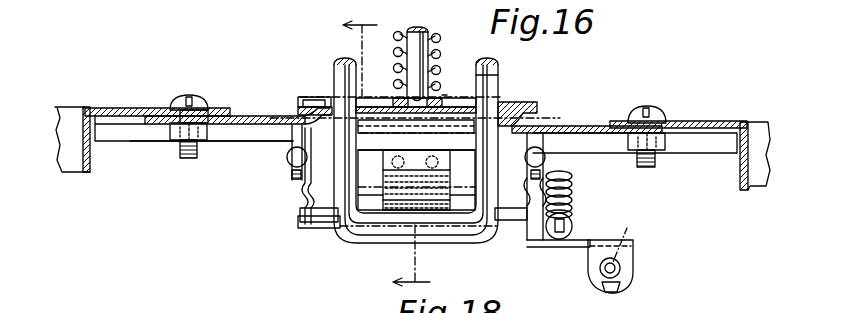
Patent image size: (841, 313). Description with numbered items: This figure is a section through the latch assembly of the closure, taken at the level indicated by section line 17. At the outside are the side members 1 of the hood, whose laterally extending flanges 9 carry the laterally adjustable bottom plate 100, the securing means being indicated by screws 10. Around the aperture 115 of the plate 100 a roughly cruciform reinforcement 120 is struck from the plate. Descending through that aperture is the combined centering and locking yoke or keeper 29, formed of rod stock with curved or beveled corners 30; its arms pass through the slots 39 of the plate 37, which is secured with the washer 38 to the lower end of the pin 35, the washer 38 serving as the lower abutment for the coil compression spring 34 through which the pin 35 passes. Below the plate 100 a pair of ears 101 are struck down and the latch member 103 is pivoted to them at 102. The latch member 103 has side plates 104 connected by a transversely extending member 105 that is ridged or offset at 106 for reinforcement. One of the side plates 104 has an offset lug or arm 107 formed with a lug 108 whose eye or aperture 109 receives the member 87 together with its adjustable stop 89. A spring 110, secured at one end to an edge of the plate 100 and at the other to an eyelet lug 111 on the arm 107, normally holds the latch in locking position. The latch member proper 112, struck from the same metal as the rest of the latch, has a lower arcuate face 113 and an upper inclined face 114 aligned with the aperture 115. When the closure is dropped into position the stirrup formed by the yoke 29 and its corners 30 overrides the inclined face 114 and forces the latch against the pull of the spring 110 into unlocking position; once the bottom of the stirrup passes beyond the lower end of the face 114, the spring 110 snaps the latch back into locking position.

The side member 1 is at (83, 152).
The laterally extending flange 9 is at (118, 107).
The screw 10 is at (182, 158).
The section line 17 is at (399, 147).
The combined centering and locking yoke or keeper 29 is at (498, 75).
The curved or beveled corners 30 is at (356, 238).
The coil compression spring 34 is at (438, 44).
The pin 35 is at (417, 27).
The plate 37 is at (522, 100).
The washer 38 is at (443, 97).
The slot 39 is at (393, 98).
The member 87 is at (616, 274).
The adjustable stop 89 is at (621, 268).
The laterally adjustable bottom plate 100 is at (586, 126).
The ear 101 is at (293, 173).
The pivot 102 is at (290, 156).
The latch member 103 is at (318, 229).
The side plate 104 is at (306, 189).
The transversely extending member 105 is at (509, 221).
The ridge or offset 106 is at (308, 199).
The offset lug or arm 107 is at (579, 248).
The lug 108 is at (656, 258).
The eye or aperture 109 is at (629, 238).
The spring 110 is at (573, 193).
The eyelet lug 111 is at (571, 228).
The latch member proper 112 is at (431, 213).
The lower arcuate face 113 is at (397, 223).
The upper inclined face 114 is at (437, 182).
The aperture 115 is at (376, 120).
The cruciform reinforcement 120 is at (300, 108).